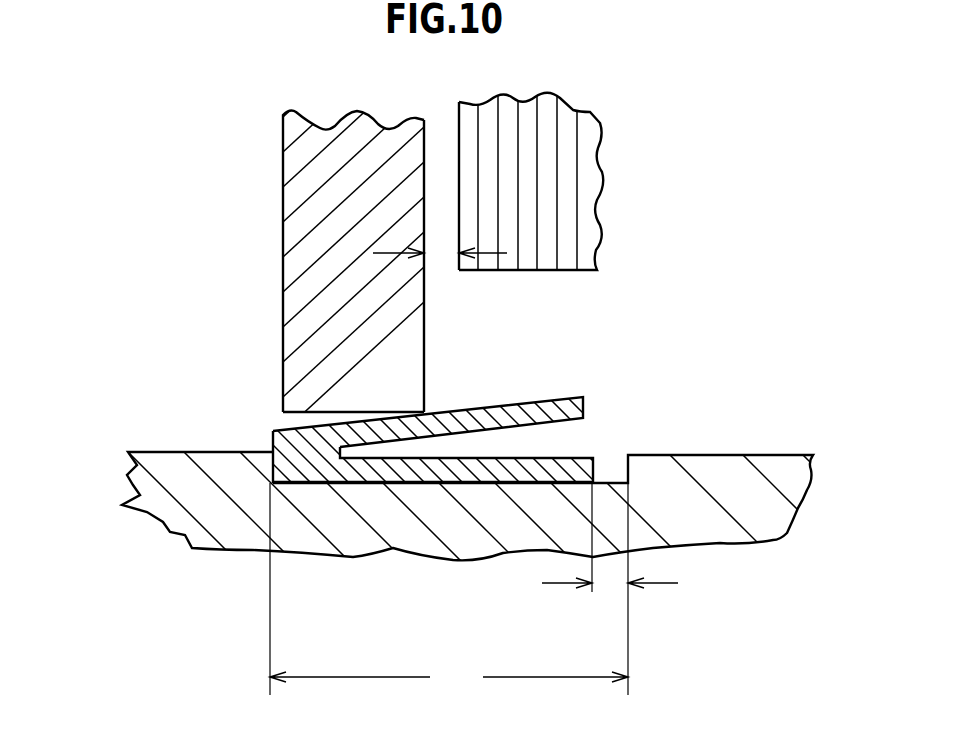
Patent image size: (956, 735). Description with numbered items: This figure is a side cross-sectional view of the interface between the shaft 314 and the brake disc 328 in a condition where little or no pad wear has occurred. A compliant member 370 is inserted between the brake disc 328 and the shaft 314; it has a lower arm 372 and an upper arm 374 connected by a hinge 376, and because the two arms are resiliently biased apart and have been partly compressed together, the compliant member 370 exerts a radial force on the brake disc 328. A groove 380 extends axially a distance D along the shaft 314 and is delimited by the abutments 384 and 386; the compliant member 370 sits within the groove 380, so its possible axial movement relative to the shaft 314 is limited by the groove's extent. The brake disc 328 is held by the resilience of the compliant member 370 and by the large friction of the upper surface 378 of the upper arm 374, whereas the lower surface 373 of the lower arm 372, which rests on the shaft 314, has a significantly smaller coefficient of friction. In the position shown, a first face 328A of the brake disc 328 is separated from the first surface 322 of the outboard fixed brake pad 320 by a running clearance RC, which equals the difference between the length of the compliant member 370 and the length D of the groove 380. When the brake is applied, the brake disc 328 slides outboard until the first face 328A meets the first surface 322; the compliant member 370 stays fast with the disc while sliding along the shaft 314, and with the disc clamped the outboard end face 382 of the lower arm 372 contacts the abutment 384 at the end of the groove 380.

The shaft 314 is at (178, 478).
The outboard fixed brake pad 320 is at (550, 178).
The first surface 322 is at (458, 148).
The brake disc 328 is at (318, 215).
The first face 328A is at (425, 330).
The compliant member 370 is at (439, 467).
The lower arm 372 is at (546, 458).
The lower surface 373 is at (512, 482).
The upper arm 374 is at (527, 414).
The hinge 376 is at (303, 458).
The upper surface 378 is at (367, 420).
The groove 380 is at (412, 482).
The outboard end face 382 is at (598, 468).
The abutment 384 is at (632, 472).
The abutment 386 is at (272, 460).
The running clearance RC is at (438, 253).
The distance D is at (449, 589).